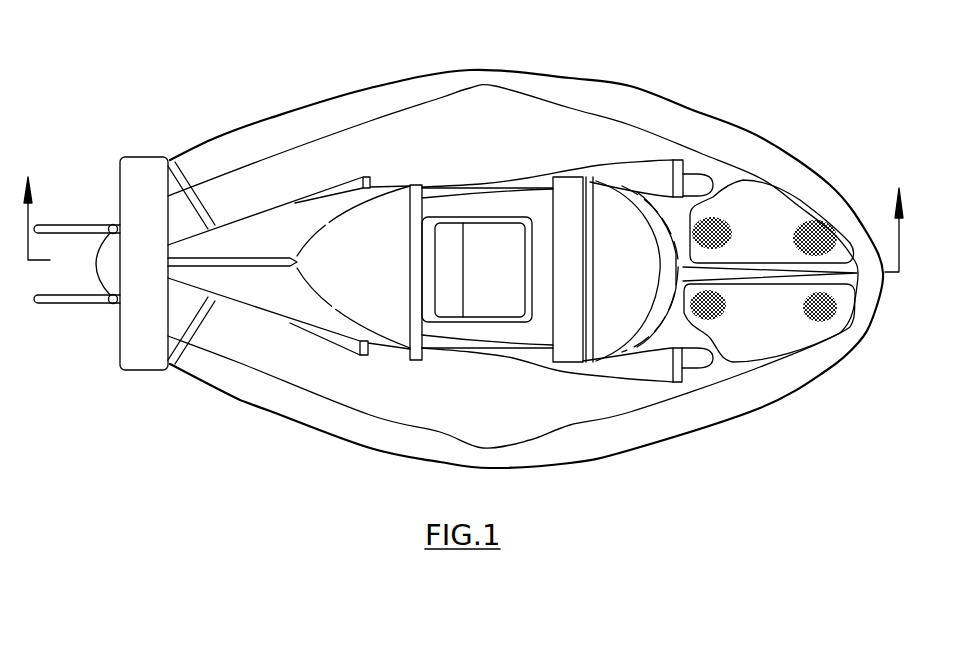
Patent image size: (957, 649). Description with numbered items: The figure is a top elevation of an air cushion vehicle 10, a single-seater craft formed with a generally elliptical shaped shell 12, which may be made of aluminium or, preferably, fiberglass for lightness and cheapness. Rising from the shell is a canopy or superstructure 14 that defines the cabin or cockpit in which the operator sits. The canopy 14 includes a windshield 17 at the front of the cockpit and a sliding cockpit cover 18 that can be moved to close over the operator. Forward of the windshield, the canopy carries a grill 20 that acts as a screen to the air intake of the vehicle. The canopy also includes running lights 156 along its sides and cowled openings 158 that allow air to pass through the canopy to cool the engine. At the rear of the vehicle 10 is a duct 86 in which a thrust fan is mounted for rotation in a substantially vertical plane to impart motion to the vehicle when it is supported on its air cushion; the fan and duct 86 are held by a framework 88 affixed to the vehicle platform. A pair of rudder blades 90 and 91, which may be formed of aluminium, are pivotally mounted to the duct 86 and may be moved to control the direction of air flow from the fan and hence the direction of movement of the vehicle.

The air cushion vehicle 10 is at (652, 47).
The shell 12 is at (688, 108).
The canopy 14 is at (378, 123).
The windshield 17 is at (604, 185).
The sliding cockpit cover 18 is at (467, 202).
The grill 20 is at (768, 210).
The duct 86 is at (133, 363).
The framework 88 is at (197, 194).
The rudder blade 90 is at (68, 225).
The rudder blade 91 is at (62, 303).
The running lights 156 is at (658, 173).
The cowled openings 158 is at (338, 346).